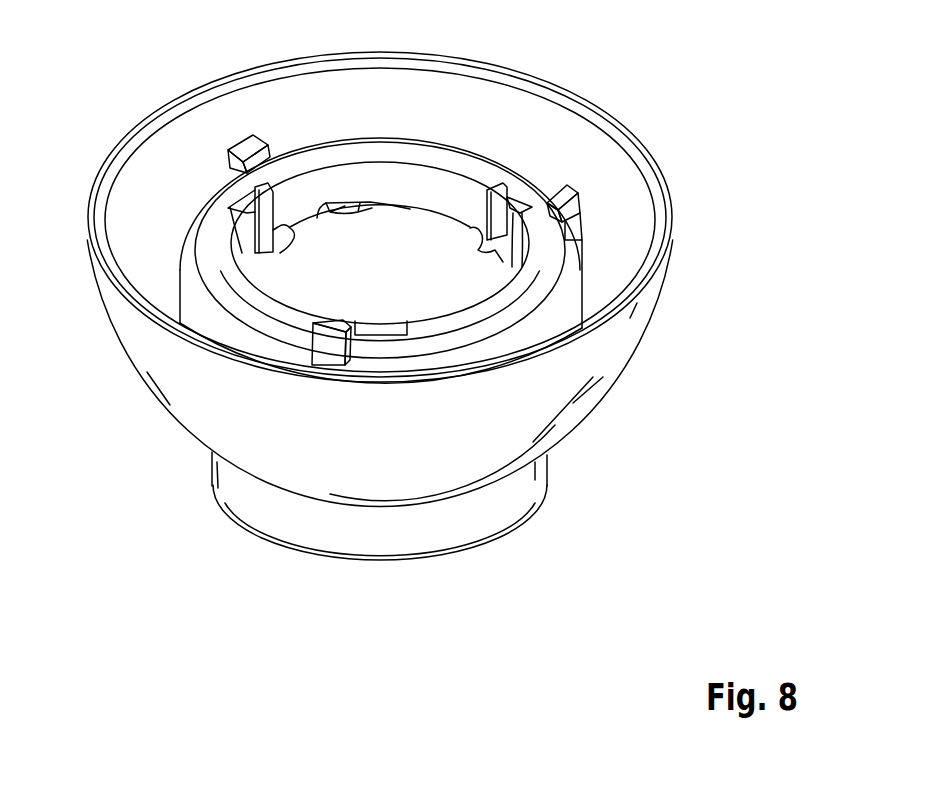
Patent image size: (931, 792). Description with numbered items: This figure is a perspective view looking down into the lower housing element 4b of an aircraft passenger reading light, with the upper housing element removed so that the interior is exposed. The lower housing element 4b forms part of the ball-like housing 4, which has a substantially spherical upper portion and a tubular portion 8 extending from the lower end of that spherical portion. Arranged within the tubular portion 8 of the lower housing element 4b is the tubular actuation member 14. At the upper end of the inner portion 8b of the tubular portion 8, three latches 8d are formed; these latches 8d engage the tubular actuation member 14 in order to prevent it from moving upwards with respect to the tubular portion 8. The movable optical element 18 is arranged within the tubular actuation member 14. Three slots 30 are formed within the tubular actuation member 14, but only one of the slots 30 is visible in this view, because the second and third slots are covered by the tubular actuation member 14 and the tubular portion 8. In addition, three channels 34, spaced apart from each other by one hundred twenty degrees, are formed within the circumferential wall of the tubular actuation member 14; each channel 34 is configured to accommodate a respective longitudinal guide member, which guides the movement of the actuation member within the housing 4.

The housing 4 is at (100, 430).
The lower housing element 4b is at (604, 346).
The tubular portion 8 is at (255, 563).
The inner portion 8b is at (191, 244).
The latches 8d is at (247, 147).
The tubular actuation member 14 is at (447, 155).
The movable optical element 18 is at (392, 283).
The slots 30 is at (376, 187).
The channels 34 is at (270, 178).